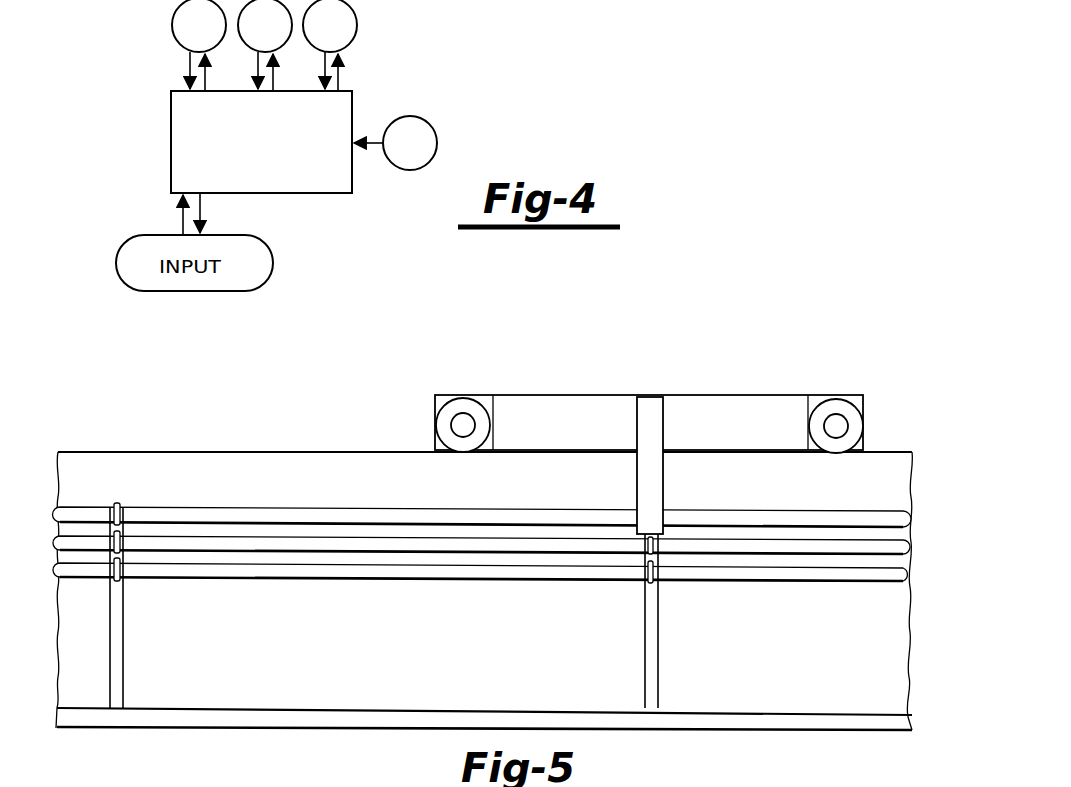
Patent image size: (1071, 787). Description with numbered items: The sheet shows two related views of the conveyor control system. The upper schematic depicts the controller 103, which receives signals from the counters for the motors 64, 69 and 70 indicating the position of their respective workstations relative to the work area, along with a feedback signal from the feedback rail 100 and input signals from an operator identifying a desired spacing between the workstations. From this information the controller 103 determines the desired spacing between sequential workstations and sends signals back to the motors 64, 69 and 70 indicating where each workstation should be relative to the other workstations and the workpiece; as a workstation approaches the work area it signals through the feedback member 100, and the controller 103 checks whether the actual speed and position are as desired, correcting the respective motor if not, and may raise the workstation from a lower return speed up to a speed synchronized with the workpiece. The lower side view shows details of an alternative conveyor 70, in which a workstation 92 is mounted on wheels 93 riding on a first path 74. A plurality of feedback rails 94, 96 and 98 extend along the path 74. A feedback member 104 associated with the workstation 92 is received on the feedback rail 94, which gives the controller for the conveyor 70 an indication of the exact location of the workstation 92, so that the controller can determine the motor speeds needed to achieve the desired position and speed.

In FIG. 4, the motor 64 is at (184, 35).
In FIG. 4, the motor 69 is at (250, 35).
In FIG. 4, the motor 70 is at (344, 35).
In FIG. 5, the motor 70 is at (483, 532).
In FIG. 5, the first path 74 is at (247, 463).
In FIG. 5, the workstation 92 is at (583, 415).
In FIG. 5, the wheels 93 is at (455, 408).
In FIG. 5, the feedback rail 94 is at (320, 515).
In FIG. 5, the feedback rail 96 is at (320, 537).
In FIG. 5, the feedback rail 98 is at (242, 567).
In FIG. 4, the feedback rail 100 is at (393, 155).
In FIG. 4, the controller 103 is at (276, 173).
In FIG. 5, the feedback member 104 is at (650, 490).